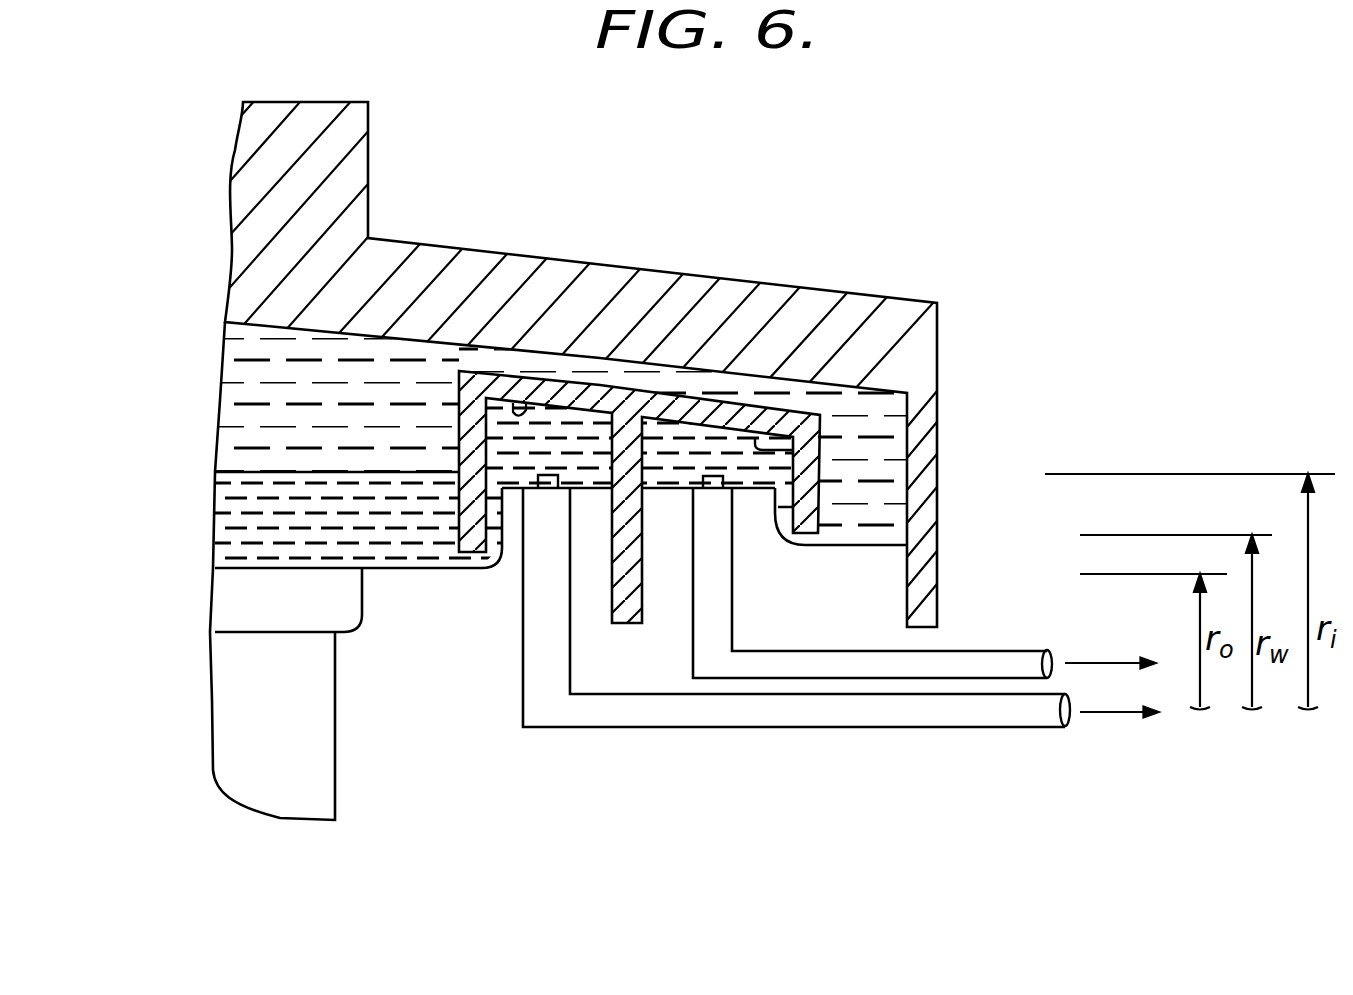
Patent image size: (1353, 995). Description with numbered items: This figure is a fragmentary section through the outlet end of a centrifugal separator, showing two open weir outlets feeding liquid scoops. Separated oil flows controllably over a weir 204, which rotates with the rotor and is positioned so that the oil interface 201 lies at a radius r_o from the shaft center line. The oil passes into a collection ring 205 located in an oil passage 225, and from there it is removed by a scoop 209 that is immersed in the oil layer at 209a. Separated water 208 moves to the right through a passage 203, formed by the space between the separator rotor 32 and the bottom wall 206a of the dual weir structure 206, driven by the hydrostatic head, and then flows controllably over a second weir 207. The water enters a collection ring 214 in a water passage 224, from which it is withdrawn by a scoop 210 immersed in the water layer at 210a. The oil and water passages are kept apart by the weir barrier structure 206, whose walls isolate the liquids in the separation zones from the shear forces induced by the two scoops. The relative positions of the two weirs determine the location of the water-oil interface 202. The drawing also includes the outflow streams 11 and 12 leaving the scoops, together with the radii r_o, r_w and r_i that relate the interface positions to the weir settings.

The separator rotor 32 is at (704, 286).
The water-oil interface 202 is at (367, 470).
The oil interface 201 is at (395, 574).
The passage 203 is at (607, 377).
The dual weir structure 206 is at (724, 410).
The oil passage 225 is at (519, 405).
The bottom wall 206a is at (787, 390).
The water passage 224 is at (800, 450).
The water layer immersion point 210a is at (725, 479).
The collection ring 214 is at (662, 492).
The weir 207 is at (803, 544).
The separated water 208 is at (853, 546).
The weir 204 is at (467, 572).
The oil layer immersion point 209a is at (550, 490).
The collection ring 205 is at (593, 492).
The scoop 209 is at (520, 687).
The scoop 210 is at (690, 625).
The first fluid flow 11 is at (1093, 660).
The second fluid flow 12 is at (1103, 714).